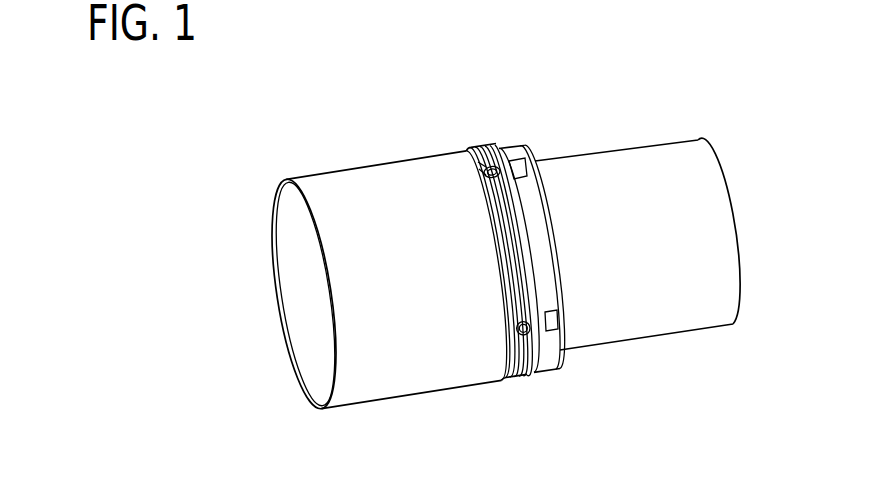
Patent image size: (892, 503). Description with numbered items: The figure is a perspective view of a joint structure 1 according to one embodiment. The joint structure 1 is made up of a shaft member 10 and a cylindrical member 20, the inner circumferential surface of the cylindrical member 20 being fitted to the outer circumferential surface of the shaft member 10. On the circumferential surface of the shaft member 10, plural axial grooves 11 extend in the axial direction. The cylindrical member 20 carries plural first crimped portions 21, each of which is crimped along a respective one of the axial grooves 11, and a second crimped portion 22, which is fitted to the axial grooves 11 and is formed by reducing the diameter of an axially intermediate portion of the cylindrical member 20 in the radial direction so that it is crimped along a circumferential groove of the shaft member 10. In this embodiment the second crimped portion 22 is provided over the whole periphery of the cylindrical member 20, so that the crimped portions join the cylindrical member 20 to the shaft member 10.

The joint structure 1 is at (500, 221).
The shaft member 10 is at (667, 157).
The axial grooves 11 is at (526, 167).
The cylindrical member 20 is at (348, 186).
The first crimped portions 21 is at (494, 164).
The second crimped portion 22 is at (463, 152).